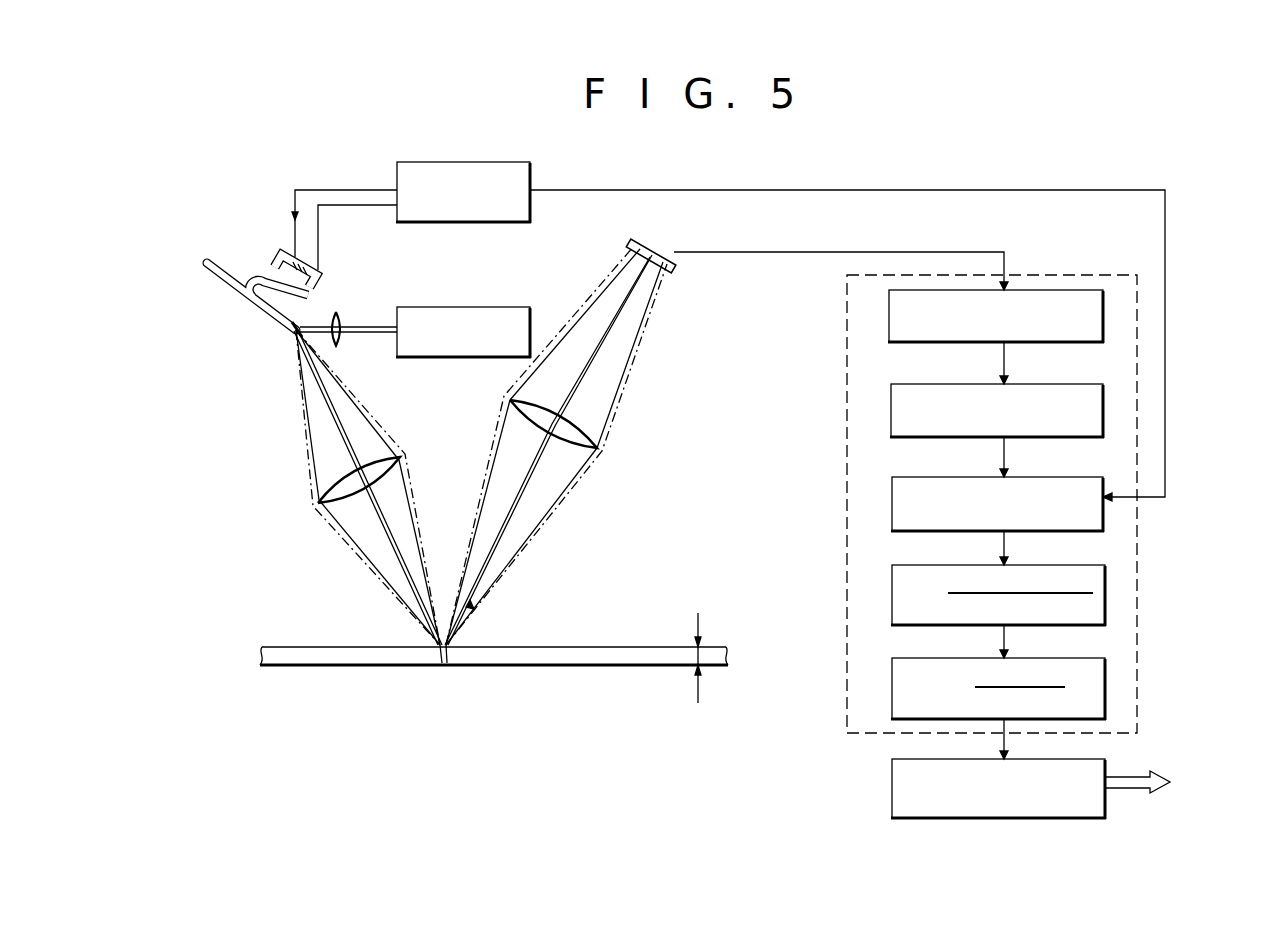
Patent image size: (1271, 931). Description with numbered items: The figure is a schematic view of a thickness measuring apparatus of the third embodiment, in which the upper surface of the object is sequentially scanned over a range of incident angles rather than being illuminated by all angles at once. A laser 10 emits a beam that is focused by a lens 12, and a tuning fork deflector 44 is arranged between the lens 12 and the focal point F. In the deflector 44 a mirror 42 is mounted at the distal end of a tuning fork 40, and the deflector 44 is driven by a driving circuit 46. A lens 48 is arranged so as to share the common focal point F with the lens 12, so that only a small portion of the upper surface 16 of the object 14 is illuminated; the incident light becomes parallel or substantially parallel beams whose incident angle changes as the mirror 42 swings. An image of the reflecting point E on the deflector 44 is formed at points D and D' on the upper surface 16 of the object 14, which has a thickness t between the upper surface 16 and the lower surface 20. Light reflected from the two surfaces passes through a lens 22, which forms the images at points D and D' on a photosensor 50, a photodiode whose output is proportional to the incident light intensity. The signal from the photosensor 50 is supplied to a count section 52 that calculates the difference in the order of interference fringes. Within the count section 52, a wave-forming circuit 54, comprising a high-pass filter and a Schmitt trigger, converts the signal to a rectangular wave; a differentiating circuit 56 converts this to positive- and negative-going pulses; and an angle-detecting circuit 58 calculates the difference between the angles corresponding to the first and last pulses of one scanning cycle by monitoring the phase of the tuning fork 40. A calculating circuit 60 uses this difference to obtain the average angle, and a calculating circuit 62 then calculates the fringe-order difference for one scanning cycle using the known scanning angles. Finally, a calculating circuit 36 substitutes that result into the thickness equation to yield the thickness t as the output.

The laser 10 is at (456, 307).
The lens 12 is at (341, 320).
The object 14 is at (494, 653).
The upper surface 16 is at (565, 647).
The lower surface 20 is at (566, 666).
The lens 22 is at (598, 442).
The calculating circuit 36 is at (1105, 764).
The tuning fork 40 is at (262, 281).
The mirror 42 is at (290, 333).
The tuning fork deflector 44 is at (243, 265).
The driving circuit 46 is at (474, 162).
The lens 48 is at (318, 496).
The photosensor 50 is at (678, 271).
The count section 52 is at (1137, 287).
The wave-forming circuit 54 is at (1103, 320).
The differentiating circuit 56 is at (1103, 421).
The angle-detecting circuit 58 is at (1103, 516).
The calculating circuit 60 is at (1105, 598).
The calculating circuit 62 is at (1105, 688).
The point D is at (398, 629).
The point D' is at (484, 628).
The reflecting point E is at (292, 342).
The focal point F is at (322, 402).
The thickness t is at (697, 656).